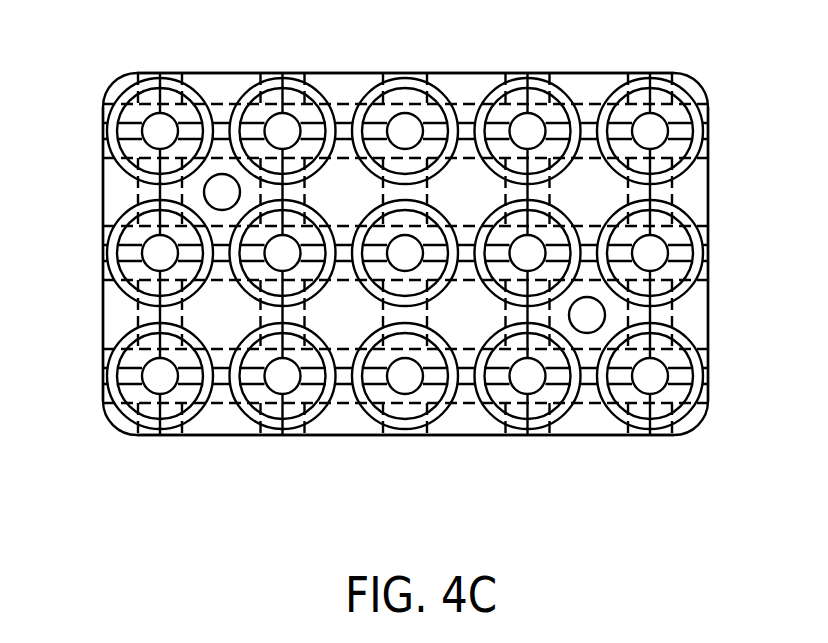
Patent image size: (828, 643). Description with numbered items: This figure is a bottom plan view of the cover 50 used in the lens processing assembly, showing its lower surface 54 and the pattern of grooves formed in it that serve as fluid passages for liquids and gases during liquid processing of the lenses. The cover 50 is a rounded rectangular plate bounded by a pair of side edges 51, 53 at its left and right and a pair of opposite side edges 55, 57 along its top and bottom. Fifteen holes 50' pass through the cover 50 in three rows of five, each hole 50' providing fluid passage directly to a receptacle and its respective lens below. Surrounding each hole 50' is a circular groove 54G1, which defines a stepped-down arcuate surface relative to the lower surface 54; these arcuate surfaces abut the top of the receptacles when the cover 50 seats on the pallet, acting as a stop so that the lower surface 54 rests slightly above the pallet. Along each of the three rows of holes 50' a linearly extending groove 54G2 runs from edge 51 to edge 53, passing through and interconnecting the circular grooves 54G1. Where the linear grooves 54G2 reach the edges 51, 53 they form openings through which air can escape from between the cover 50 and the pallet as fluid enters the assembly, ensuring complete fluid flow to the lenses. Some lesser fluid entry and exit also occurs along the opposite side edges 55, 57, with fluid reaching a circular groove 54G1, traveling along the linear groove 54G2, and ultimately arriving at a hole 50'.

The cover 50 is at (405, 225).
The hole 50' is at (405, 214).
The edge 51 is at (103, 340).
The edge 53 is at (708, 325).
The lower surface 54 is at (585, 88).
The circular groove 54G1 is at (122, 97).
The linearly extending groove 54G2 is at (222, 125).
The side edge 55 is at (360, 73).
The side edge 57 is at (578, 436).